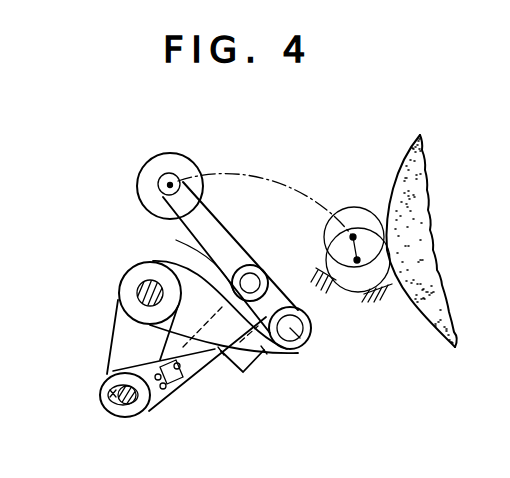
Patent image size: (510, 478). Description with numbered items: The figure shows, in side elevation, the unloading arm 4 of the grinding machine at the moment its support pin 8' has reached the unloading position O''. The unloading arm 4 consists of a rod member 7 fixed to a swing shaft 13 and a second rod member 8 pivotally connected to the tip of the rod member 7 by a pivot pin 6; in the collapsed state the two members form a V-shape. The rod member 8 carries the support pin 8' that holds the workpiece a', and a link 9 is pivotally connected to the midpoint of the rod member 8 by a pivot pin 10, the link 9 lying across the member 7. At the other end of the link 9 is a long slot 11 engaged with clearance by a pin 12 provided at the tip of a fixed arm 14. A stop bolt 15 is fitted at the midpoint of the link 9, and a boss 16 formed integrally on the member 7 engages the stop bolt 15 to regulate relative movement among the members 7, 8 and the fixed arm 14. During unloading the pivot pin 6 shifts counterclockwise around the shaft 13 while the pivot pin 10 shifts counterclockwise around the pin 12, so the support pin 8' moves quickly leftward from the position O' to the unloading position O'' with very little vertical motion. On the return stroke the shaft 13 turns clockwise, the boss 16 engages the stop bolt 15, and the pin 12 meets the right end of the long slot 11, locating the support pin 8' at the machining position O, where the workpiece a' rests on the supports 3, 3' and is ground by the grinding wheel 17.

The work support 3 is at (327, 298).
The work support 3' is at (377, 319).
The unloading arm 4 is at (312, 343).
The pivot pin 6 is at (303, 344).
The rod member 7 is at (192, 303).
The rod member 8 is at (230, 257).
The support pin 8' is at (149, 186).
The link 9 is at (213, 363).
The pivot pin 10 is at (210, 252).
The long slot 11 is at (117, 394).
The pin 12 is at (129, 405).
The swing shaft 13 is at (137, 293).
The fixed arm 14 is at (115, 342).
The stop bolt 15 is at (191, 388).
The boss 16 is at (257, 362).
The grinding wheel 17 is at (414, 147).
The machining position O is at (336, 260).
The intermediate position O' is at (333, 237).
The unloading position O'' is at (265, 172).
The workpiece a' is at (261, 155).